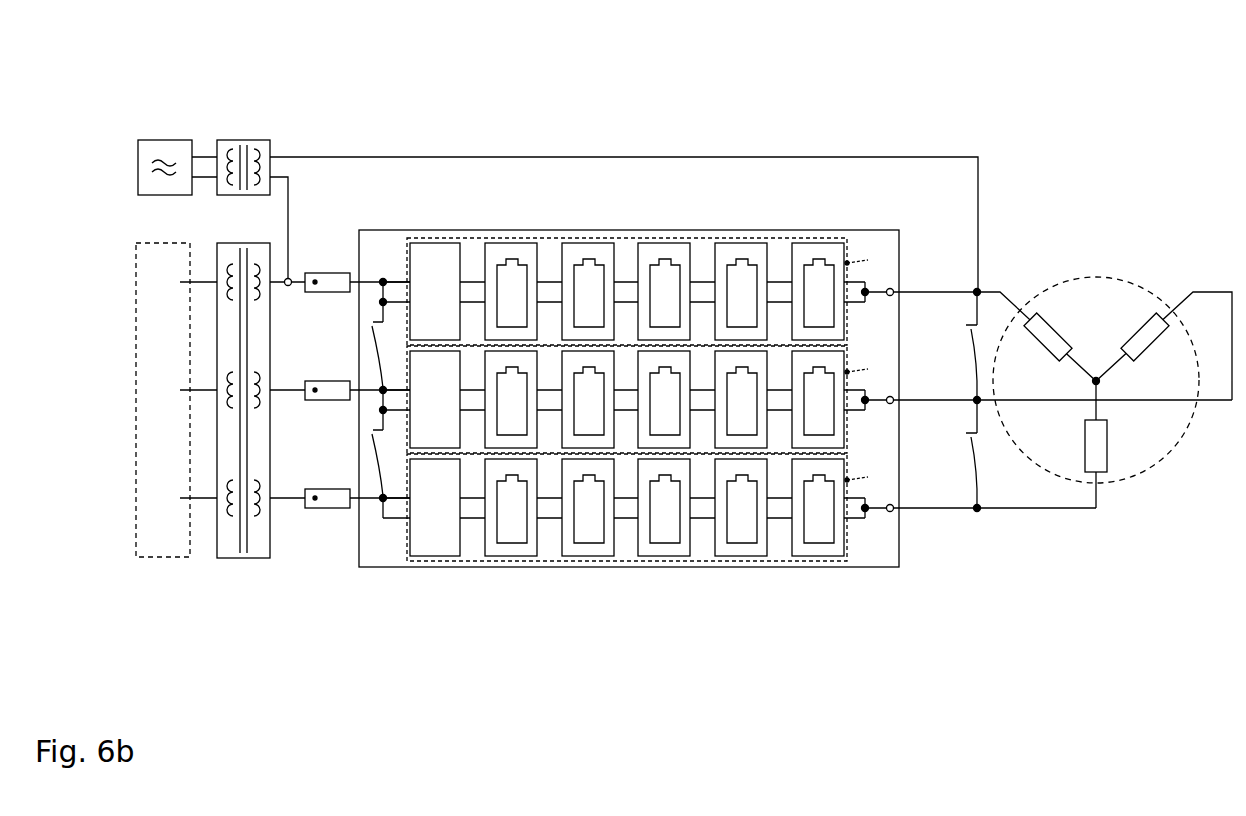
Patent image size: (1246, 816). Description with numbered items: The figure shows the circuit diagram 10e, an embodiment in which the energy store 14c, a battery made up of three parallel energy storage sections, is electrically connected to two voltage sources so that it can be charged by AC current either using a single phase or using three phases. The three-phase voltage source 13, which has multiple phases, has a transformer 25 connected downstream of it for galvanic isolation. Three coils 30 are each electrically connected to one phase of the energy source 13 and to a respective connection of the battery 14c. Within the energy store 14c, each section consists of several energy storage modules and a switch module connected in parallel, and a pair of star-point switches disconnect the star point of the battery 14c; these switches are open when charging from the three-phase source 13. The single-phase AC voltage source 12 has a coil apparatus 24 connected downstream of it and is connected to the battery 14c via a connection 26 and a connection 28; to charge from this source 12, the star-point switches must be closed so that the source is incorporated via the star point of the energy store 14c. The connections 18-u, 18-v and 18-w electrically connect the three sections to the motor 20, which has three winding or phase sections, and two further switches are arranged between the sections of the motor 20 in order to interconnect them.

The single-phase AC voltage source 12 is at (164, 136).
The coil apparatus 24 is at (237, 138).
The circuit diagram 10e is at (368, 132).
The connection 28 is at (291, 278).
The coil 30 is at (318, 280).
The three-phase voltage source 13 is at (165, 574).
The transformer 25 is at (233, 548).
The energy store 14c is at (699, 425).
The connection 18-u is at (893, 289).
The connection 18-v is at (893, 403).
The connection 18-w is at (893, 511).
The connection 26 is at (981, 289).
The motor 20 is at (1142, 278).